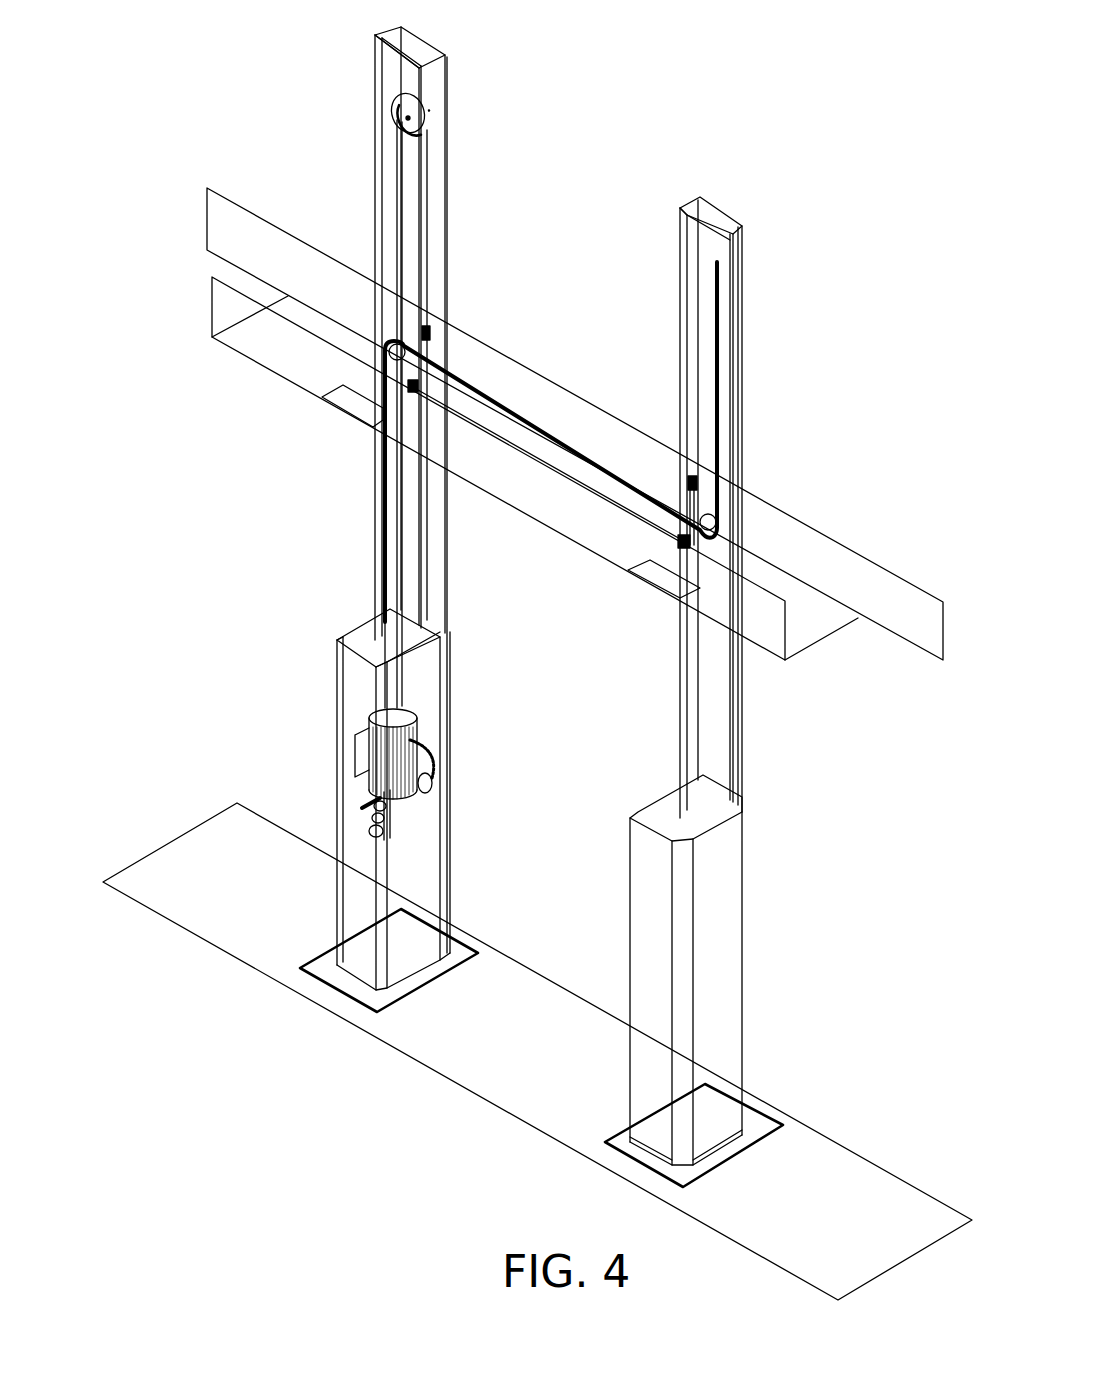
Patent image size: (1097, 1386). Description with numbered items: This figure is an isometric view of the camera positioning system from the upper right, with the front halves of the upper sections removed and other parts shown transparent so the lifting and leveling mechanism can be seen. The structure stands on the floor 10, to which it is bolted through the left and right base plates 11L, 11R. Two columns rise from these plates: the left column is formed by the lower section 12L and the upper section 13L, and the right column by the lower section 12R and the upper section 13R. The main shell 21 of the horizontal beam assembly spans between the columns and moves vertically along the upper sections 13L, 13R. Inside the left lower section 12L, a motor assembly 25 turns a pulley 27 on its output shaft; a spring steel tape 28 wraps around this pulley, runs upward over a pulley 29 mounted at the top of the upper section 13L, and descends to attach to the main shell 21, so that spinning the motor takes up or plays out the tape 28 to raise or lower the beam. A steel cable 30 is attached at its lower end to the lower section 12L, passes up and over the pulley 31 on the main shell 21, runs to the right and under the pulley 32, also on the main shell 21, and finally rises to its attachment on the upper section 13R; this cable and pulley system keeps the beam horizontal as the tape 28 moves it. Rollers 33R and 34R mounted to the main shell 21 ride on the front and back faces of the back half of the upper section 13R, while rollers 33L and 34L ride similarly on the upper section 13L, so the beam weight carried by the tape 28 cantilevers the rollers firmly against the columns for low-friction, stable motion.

The floor 10 is at (245, 918).
The left base plate 11L is at (380, 1000).
The right base plate 11R is at (683, 1170).
The left lower section 12L is at (350, 770).
The right lower section 12R is at (645, 1005).
The left upper section 13L is at (378, 588).
The right upper section 13R is at (685, 775).
The main shell 21 is at (775, 515).
The motor assembly 25 is at (405, 760).
The pulley 27 is at (420, 790).
The spring steel tape 28 is at (428, 152).
The pulley 29 is at (405, 95).
The steel cable 30 is at (718, 390).
The pulley 31 is at (391, 353).
The pulley 32 is at (712, 540).
The left roller 33L is at (418, 380).
The right roller 33R is at (680, 543).
The left roller 34L is at (432, 335).
The right roller 34R is at (688, 480).